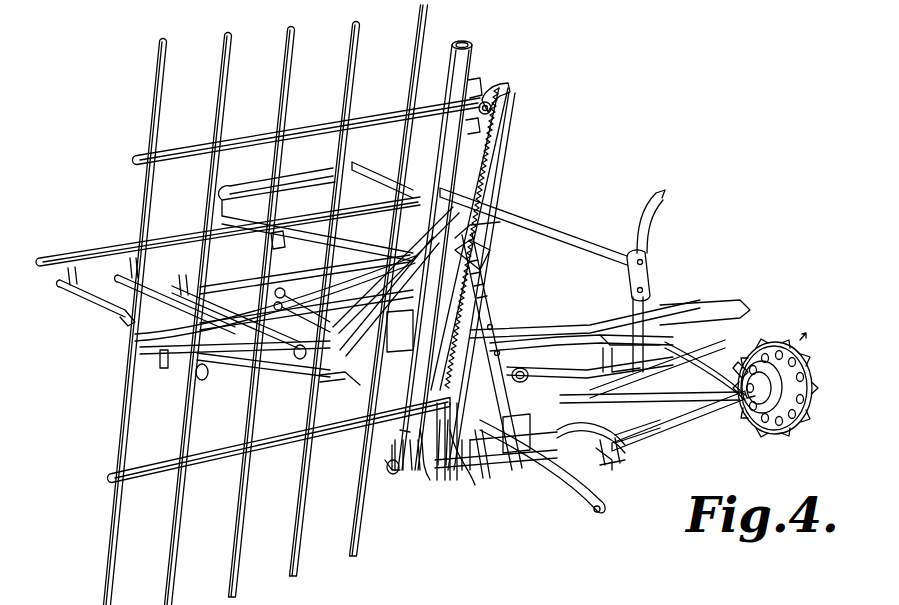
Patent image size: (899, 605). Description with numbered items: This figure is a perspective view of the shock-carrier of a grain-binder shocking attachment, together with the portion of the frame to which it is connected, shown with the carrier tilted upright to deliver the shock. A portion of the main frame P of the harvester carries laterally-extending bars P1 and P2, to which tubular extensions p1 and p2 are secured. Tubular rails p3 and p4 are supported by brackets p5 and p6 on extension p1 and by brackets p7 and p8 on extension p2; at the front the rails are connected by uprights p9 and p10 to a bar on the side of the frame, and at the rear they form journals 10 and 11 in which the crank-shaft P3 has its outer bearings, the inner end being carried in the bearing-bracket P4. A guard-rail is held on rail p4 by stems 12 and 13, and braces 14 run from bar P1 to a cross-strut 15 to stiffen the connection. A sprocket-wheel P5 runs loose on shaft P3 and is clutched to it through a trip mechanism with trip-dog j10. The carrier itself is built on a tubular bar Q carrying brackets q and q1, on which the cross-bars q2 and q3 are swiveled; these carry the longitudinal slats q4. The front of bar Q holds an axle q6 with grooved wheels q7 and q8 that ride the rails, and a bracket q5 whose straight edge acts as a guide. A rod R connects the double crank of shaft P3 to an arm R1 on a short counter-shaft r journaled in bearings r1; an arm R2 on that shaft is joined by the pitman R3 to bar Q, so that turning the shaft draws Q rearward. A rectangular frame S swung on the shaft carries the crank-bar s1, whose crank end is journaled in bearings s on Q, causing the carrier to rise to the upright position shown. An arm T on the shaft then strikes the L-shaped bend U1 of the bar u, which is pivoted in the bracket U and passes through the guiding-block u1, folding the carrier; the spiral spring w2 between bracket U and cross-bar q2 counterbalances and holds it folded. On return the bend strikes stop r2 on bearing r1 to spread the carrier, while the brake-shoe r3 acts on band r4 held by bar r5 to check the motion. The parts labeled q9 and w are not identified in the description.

The bracket U is at (496, 86).
The bracket q1 is at (510, 96).
The cross-bar q3 is at (318, 115).
The cross-bar q2 is at (280, 440).
The longitudinal slats q4 is at (292, 507).
The bracket q5 is at (428, 485).
The axle q6 is at (470, 488).
The grooved wheel q7 is at (414, 470).
The grooved wheel q8 is at (484, 482).
The link q9 is at (380, 445).
The bracket q is at (478, 368).
The crank-bar s1 is at (472, 200).
The bearings s is at (488, 252).
The tubular bar Q is at (490, 300).
The cross-strut 15 is at (572, 243).
The spiral spring w2 is at (500, 228).
The main frame P is at (716, 318).
The laterally-extending bar P1 is at (408, 320).
The laterally-extending bar P2 is at (700, 352).
The crank-shaft P3 is at (678, 420).
The bearing-bracket P4 is at (686, 370).
The sprocket-wheel P5 is at (753, 434).
The trip-dog j10 is at (762, 343).
The tubular extension p1 is at (273, 353).
The tubular extension p2 is at (440, 470).
The tubular rail p3 is at (362, 416).
The tubular rail p4 is at (226, 300).
The bracket p5 is at (158, 398).
The bracket p6 is at (287, 362).
The bracket p7 is at (398, 474).
The bracket p8 is at (465, 475).
The upright p9 is at (78, 281).
The upright p10 is at (140, 271).
The stem 12 is at (176, 290).
The stem 13 is at (525, 378).
The braces 14 is at (385, 304).
The rod R is at (598, 432).
The arm R1 is at (283, 290).
The arm R2 is at (200, 300).
The pitman R3 is at (341, 390).
The counter-shaft r is at (171, 360).
The bearings r1 is at (306, 358).
The stop r2 is at (158, 360).
The brake-shoe r3 is at (628, 456).
The band r4 is at (624, 430).
The bar r5 is at (630, 336).
The bar u is at (545, 340).
The guiding-block u1 is at (540, 367).
The L-shaped bend U1 is at (531, 376).
The rectangular frame S is at (528, 335).
The bracket w is at (621, 368).
The arm T is at (470, 500).
The journal 10 is at (500, 470).
The journal 11 is at (543, 473).